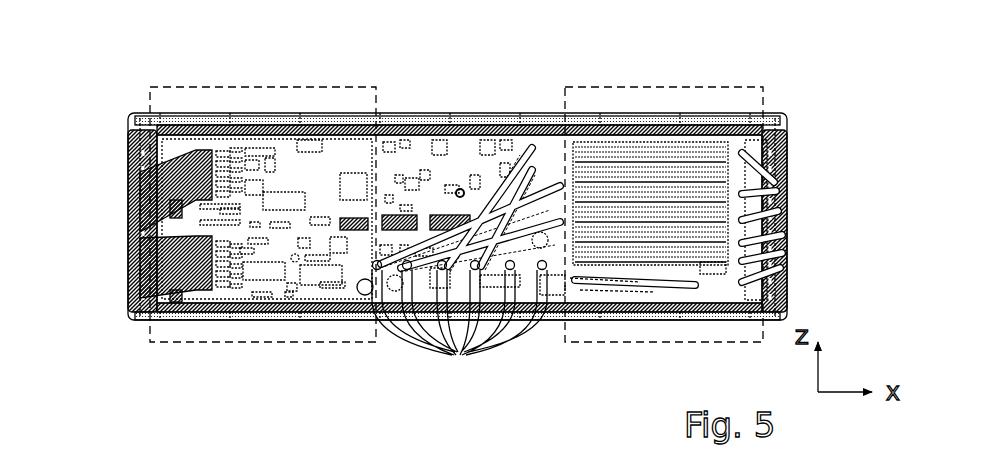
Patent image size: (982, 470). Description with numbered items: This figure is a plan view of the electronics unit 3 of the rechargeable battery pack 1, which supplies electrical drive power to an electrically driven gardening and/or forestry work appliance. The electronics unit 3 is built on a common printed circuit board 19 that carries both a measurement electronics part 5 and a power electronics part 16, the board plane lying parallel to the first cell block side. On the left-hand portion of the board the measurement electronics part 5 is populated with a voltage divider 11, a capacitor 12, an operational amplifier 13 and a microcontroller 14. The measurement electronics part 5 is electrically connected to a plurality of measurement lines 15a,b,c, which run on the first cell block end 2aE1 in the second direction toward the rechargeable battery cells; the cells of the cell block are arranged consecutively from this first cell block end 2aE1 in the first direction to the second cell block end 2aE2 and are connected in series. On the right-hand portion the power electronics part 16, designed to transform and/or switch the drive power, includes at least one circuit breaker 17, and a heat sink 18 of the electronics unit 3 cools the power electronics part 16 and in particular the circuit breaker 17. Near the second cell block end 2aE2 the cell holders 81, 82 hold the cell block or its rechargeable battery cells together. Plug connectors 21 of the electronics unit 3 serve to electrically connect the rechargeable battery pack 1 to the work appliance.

The rechargeable battery pack 1 is at (112, 84).
The first cell block end 2aE1 is at (142, 218).
The second cell block end 2aE2 is at (787, 216).
The electronics unit 3 is at (447, 143).
The measurement electronics part 5 is at (378, 100).
The voltage divider 11 is at (206, 297).
The capacitor 12 is at (250, 297).
The operational amplifier 13 is at (292, 297).
The microcontroller 14 is at (336, 297).
The measurement lines 15a,b,c is at (142, 276).
The power electronics part 16 is at (593, 87).
The circuit breaker 17 is at (698, 300).
The heat sink 18 is at (656, 205).
The common printed circuit board 19 is at (413, 183).
The plug connectors 21 is at (459, 323).
The cell holder 81 is at (787, 280).
The cell holder 82 is at (787, 165).